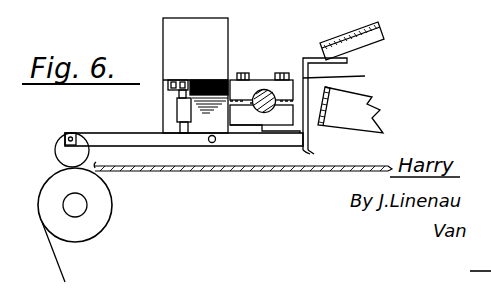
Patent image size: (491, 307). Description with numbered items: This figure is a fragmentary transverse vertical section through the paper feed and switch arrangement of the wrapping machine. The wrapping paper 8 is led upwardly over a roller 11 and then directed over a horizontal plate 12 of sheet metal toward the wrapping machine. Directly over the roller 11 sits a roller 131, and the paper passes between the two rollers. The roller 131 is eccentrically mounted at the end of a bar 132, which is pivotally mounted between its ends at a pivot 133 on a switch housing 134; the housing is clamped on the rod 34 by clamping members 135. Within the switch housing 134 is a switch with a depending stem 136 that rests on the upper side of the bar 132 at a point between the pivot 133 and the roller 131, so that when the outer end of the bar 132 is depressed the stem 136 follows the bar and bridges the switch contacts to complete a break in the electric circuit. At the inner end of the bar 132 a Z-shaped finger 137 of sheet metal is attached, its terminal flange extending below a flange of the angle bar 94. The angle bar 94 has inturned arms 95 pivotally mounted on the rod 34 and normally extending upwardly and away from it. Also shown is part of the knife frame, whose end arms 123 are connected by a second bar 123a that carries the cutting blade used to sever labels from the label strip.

The wrapping paper 8 is at (61, 265).
The roller 11 is at (103, 219).
The horizontal plate 12 is at (206, 168).
The rod 34 is at (264, 90).
The angle bar 94 is at (386, 26).
The inturned arms 95 is at (305, 58).
The end arms 123 is at (372, 103).
The second bar 123a is at (350, 110).
The roller 131 is at (62, 157).
The bar 132 is at (107, 133).
The pivot 133 is at (212, 143).
The switch housing 134 is at (208, 80).
The clamping members 135 is at (313, 150).
The stem 136 is at (177, 97).
The Z-shaped finger 137 is at (352, 81).